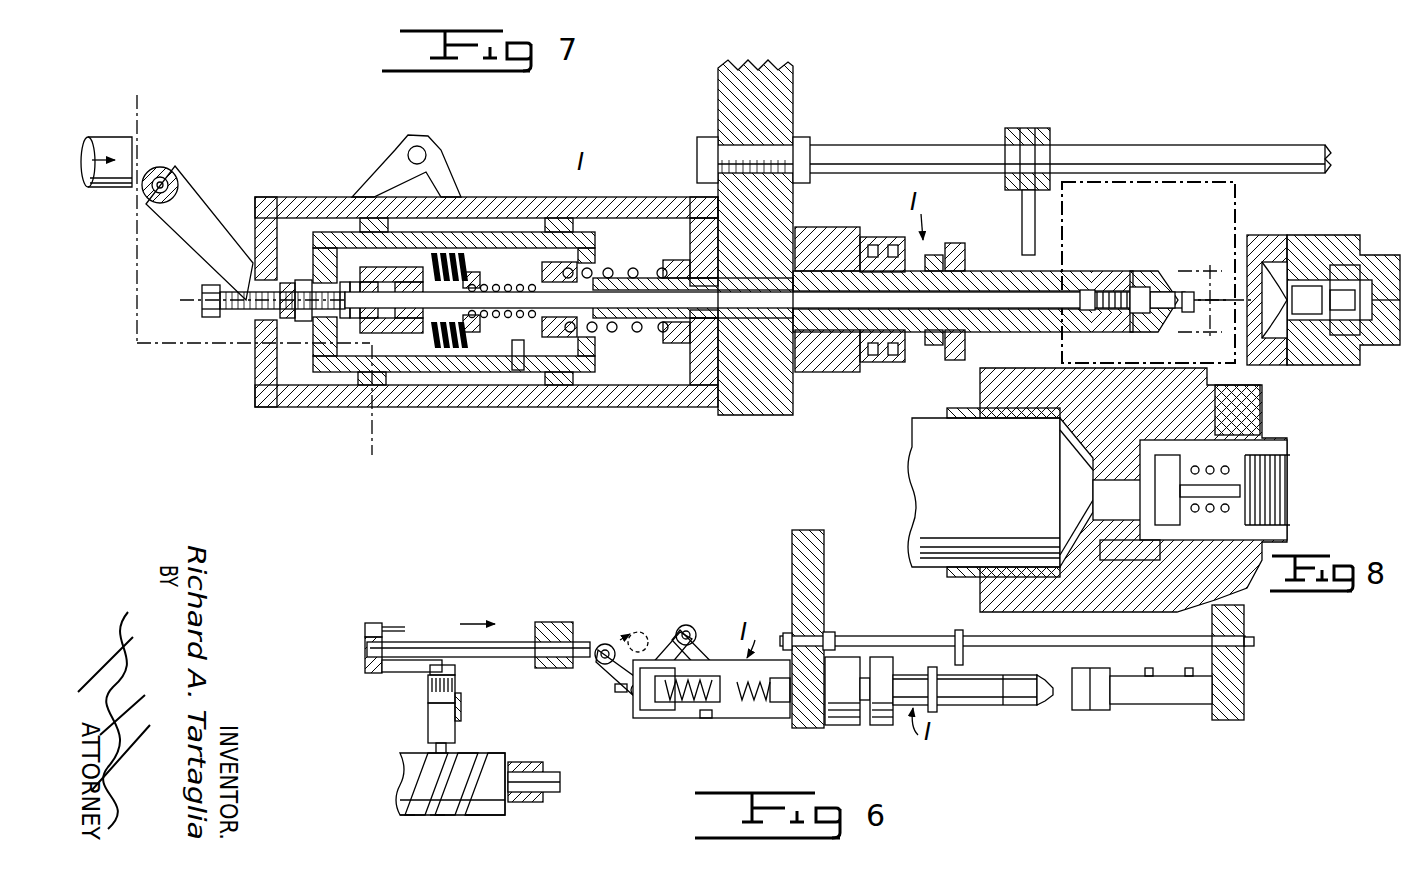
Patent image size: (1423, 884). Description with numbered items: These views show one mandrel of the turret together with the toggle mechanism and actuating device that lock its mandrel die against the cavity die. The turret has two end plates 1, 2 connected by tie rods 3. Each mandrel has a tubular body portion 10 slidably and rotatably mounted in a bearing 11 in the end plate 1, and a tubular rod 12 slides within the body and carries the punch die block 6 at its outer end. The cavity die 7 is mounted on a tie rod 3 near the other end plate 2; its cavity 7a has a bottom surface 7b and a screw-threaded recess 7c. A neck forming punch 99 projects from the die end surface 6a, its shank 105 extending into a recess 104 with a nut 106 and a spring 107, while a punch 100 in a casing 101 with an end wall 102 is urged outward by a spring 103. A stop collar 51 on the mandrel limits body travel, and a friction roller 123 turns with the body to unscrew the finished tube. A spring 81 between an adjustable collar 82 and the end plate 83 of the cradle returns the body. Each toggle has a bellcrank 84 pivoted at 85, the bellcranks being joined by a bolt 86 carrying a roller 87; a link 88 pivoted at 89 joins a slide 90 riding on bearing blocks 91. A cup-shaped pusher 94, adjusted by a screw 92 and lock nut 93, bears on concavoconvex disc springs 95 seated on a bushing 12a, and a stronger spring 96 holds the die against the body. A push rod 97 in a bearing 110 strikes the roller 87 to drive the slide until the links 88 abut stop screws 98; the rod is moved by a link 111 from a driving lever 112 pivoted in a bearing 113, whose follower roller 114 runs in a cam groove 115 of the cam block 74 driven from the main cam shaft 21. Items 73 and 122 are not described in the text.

In FIG. 7, the end plate 1 is at (752, 66).
In FIG. 8, the end plate 1 is at (1060, 432).
In FIG. 6, the end plate 1 is at (795, 577).
In FIG. 6, the end plate 2 is at (1245, 680).
In FIG. 7, the tie rod 3 is at (883, 158).
In FIG. 6, the tie rod 3 is at (882, 642).
In FIG. 7, the punch die block 6 is at (1120, 275).
In FIG. 7, the die end surface 6a is at (1180, 275).
In FIG. 8, the die end surface 6a is at (1070, 505).
In FIG. 7, the cavity die 7 is at (1275, 238).
In FIG. 6, the cavity die 7 is at (1100, 707).
In FIG. 7, the die cavity 7a is at (118, 104).
In FIG. 7, the bottom surface of cavity 7b is at (1267, 258).
In FIG. 7, the screw-threaded recess 7c is at (1315, 255).
In FIG. 6, the tubular body portion 10 is at (765, 703).
In FIG. 7, the bearing 11 is at (760, 333).
In FIG. 8, the bearing 11 is at (1090, 465).
In FIG. 7, the rod 12 is at (680, 350).
In FIG. 7, the bushing 12a is at (450, 340).
In FIG. 6, the main cam shaft 21 is at (560, 782).
In FIG. 7, the stop collar 51 is at (960, 250).
In FIG. 6, the chuck jaw 73 is at (470, 815).
In FIG. 6, the cam block 74 is at (446, 815).
In FIG. 7, the spring 81 is at (618, 336).
In FIG. 7, the adjustable collar 82 is at (560, 213).
In FIG. 7, the end plate of cradle 83 is at (693, 205).
In FIG. 7, the bellcrank 84 is at (203, 237).
In FIG. 6, the bellcrank 84 is at (655, 658).
In FIG. 6, the pivot 85 is at (632, 696).
In FIG. 7, the bolt 86 is at (175, 172).
In FIG. 7, the roller 87 is at (148, 194).
In FIG. 7, the link 88 is at (430, 155).
In FIG. 6, the link 88 is at (697, 635).
In FIG. 7, the pivot connection 89 is at (637, 270).
In FIG. 7, the slide 90 is at (325, 407).
In FIG. 6, the slide 90 is at (683, 712).
In FIG. 7, the bearing block 91 is at (368, 383).
In FIG. 7, the screw 92 is at (318, 345).
In FIG. 7, the lock nut 93 is at (275, 315).
In FIG. 7, the cup-shaped pusher 94 is at (415, 335).
In FIG. 6, the cup-shaped pusher 94 is at (657, 710).
In FIG. 7, the concavoconvex disc springs 95 is at (470, 270).
In FIG. 7, the spring 96 is at (515, 345).
In FIG. 7, the push rod 97 is at (106, 135).
In FIG. 6, the push rod 97 is at (508, 640).
In FIG. 7, the stop screw 98 is at (555, 340).
In FIG. 6, the stop screw 98 is at (708, 715).
In FIG. 7, the neck forming punch 99 is at (1192, 310).
In FIG. 8, the punch 100 is at (1260, 570).
In FIG. 8, the casing 101 is at (1257, 437).
In FIG. 8, the end wall 102 is at (1140, 545).
In FIG. 8, the spring 103 is at (1290, 475).
In FIG. 7, the recess 104 is at (1165, 310).
In FIG. 7, the shank 105 is at (1130, 290).
In FIG. 7, the nut 106 is at (1088, 292).
In FIG. 7, the spring 107 is at (1145, 310).
In FIG. 6, the bearing 110 is at (560, 620).
In FIG. 6, the link 111 is at (400, 672).
In FIG. 6, the driving lever 112 is at (452, 680).
In FIG. 6, the bearing 113 is at (430, 718).
In FIG. 6, the follower roller 114 is at (472, 753).
In FIG. 6, the cam groove 115 is at (410, 815).
In FIG. 6, the stop 122 is at (401, 622).
In FIG. 7, the friction roller 123 is at (870, 372).